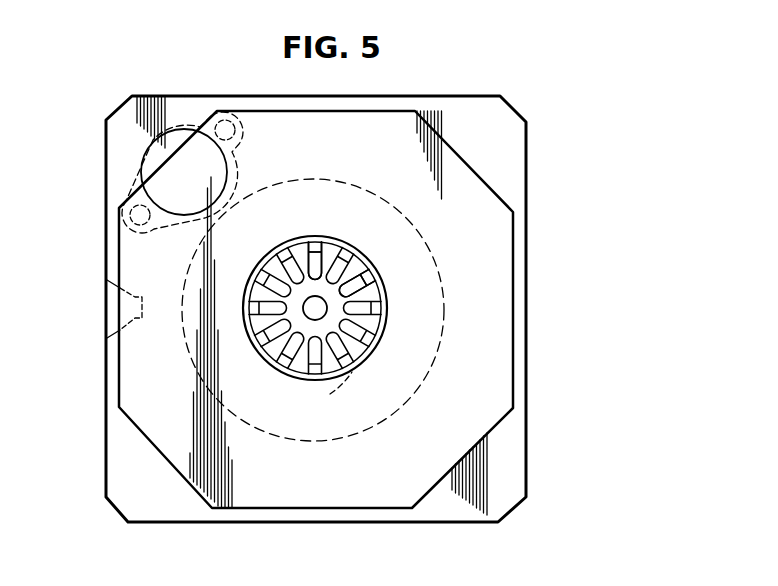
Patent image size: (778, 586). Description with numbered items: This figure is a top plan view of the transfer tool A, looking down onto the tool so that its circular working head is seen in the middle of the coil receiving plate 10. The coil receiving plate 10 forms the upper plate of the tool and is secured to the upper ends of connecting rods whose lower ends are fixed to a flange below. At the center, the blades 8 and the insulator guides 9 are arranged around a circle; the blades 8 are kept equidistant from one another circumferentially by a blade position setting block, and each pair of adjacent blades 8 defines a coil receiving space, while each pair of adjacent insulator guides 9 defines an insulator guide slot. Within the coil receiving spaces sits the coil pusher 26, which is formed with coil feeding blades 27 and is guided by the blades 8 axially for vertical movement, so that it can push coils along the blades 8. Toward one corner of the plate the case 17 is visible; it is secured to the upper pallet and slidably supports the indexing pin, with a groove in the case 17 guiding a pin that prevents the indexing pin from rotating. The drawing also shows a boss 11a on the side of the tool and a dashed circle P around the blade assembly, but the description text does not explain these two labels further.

The transfer tool A is at (468, 197).
The coil receiving plate 10 is at (487, 358).
The case 17 is at (143, 165).
The boss 11a is at (118, 288).
The pitch circle P is at (312, 397).
The blades 8 is at (328, 293).
The insulator guide 9 is at (315, 253).
The coil pusher 26 is at (340, 286).
The coil feeding blades 27 is at (373, 321).